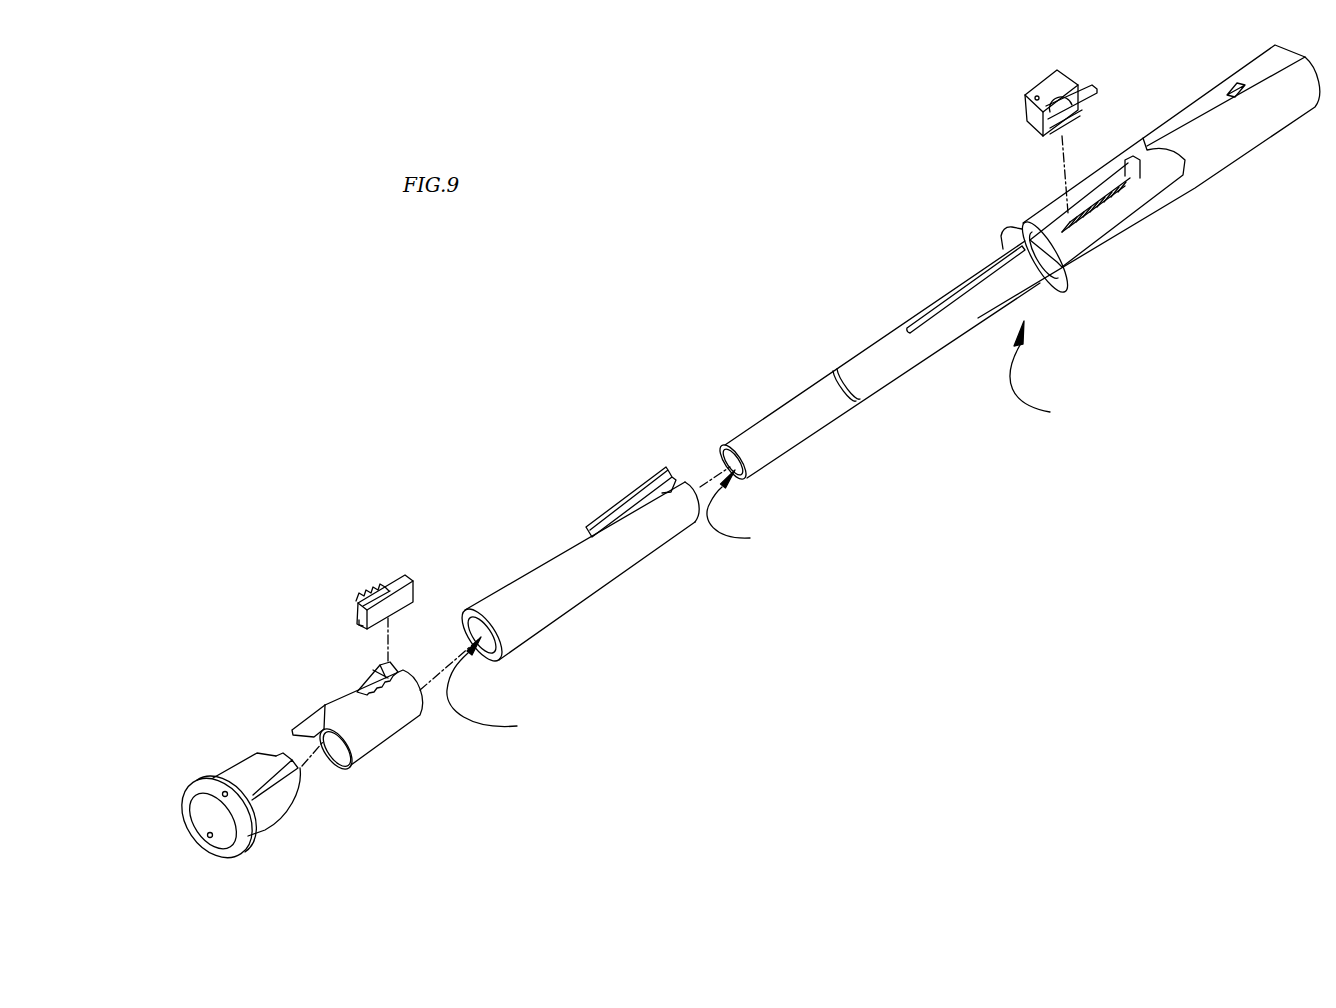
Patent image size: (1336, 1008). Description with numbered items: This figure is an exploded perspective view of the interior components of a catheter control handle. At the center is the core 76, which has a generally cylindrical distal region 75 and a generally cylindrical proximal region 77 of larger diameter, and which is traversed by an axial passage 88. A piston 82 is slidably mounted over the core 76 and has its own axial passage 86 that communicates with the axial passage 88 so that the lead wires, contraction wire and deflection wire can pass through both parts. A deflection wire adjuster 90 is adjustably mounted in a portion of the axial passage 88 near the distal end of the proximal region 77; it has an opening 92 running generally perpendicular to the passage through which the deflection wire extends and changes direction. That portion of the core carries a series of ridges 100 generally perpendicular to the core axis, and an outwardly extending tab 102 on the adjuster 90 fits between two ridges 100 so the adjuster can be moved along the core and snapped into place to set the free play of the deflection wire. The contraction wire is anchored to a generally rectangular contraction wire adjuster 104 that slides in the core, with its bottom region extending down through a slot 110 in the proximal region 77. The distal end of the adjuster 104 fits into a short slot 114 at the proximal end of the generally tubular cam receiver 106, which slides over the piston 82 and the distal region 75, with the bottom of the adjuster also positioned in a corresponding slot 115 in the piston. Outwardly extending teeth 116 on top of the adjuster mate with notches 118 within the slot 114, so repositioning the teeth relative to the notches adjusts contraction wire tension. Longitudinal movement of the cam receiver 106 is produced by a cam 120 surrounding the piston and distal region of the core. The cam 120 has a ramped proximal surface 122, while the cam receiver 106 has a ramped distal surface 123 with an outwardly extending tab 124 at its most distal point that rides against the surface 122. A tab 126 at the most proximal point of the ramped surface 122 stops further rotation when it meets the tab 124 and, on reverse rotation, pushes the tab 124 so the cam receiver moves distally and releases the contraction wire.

The distal region 75 is at (788, 437).
The core 76 is at (1045, 372).
The proximal region 77 is at (1213, 148).
The piston 82 is at (547, 607).
The axial passage 86 is at (496, 688).
The axial passage 88 is at (742, 511).
The deflection wire adjuster 90 is at (1050, 86).
The opening 92 is at (1062, 103).
The ridges 100 is at (1122, 205).
The tab 102 is at (1097, 93).
The contraction wire adjuster 104 is at (393, 580).
The cam receiver 106 is at (383, 733).
The slot 110 is at (935, 310).
The slot 114 is at (393, 668).
The slot 115 is at (673, 473).
The teeth 116 is at (357, 597).
The notches 118 is at (383, 676).
The cam 120 is at (228, 858).
The ramped proximal surface 122 is at (268, 755).
The ramped distal surface 123 is at (336, 777).
The tab 124 is at (306, 728).
The tab 126 is at (291, 772).